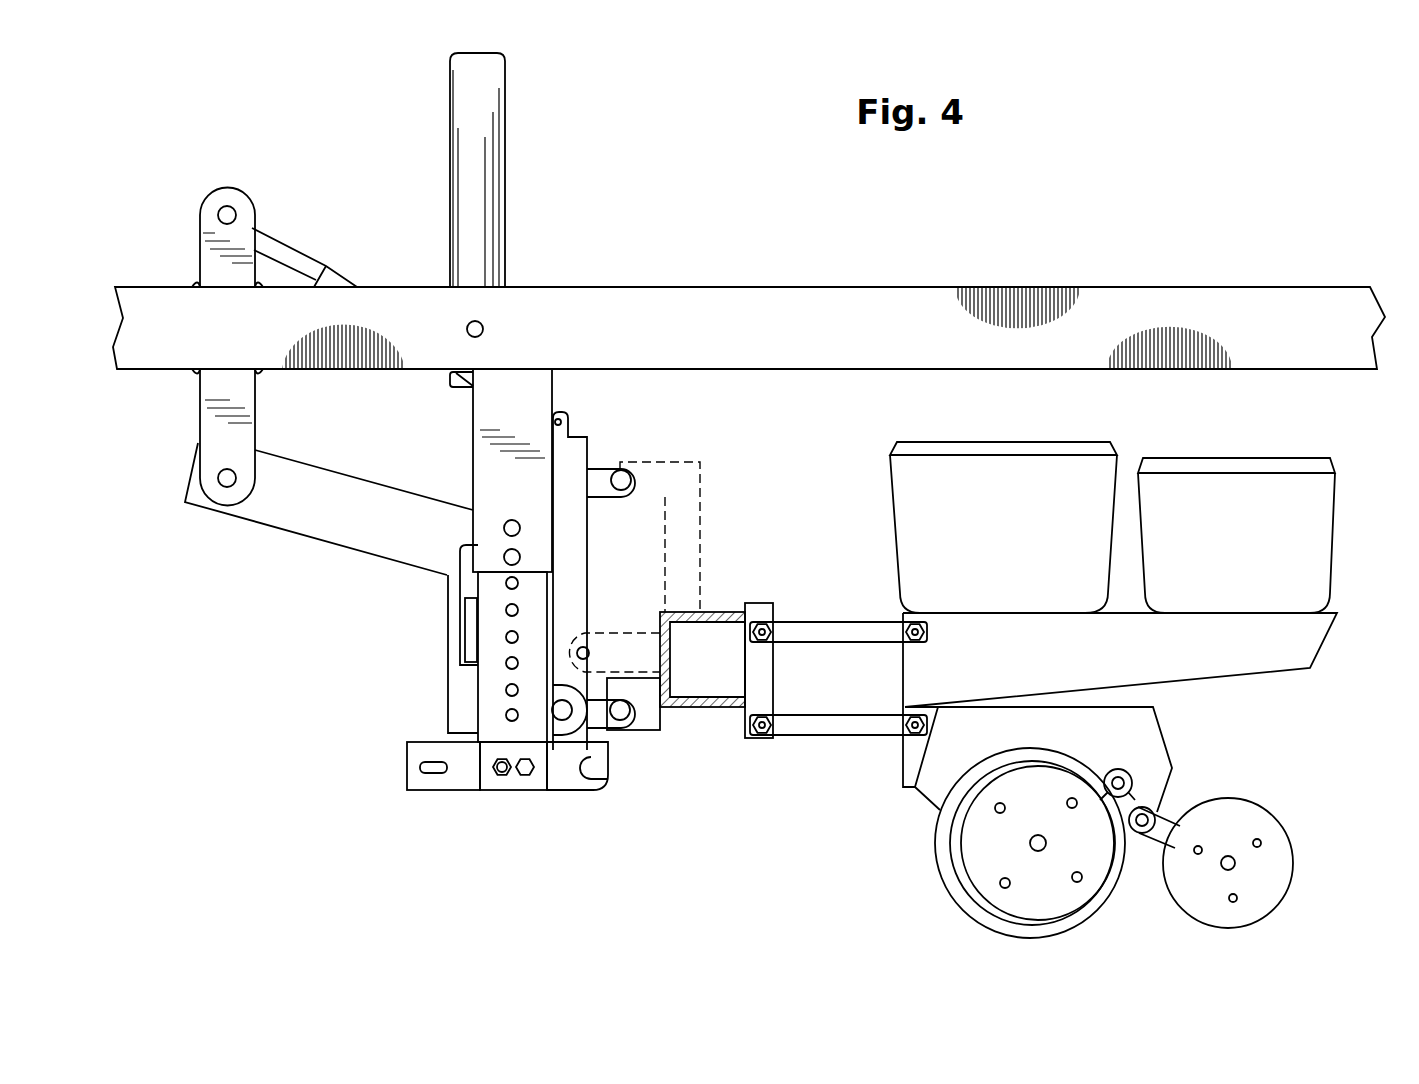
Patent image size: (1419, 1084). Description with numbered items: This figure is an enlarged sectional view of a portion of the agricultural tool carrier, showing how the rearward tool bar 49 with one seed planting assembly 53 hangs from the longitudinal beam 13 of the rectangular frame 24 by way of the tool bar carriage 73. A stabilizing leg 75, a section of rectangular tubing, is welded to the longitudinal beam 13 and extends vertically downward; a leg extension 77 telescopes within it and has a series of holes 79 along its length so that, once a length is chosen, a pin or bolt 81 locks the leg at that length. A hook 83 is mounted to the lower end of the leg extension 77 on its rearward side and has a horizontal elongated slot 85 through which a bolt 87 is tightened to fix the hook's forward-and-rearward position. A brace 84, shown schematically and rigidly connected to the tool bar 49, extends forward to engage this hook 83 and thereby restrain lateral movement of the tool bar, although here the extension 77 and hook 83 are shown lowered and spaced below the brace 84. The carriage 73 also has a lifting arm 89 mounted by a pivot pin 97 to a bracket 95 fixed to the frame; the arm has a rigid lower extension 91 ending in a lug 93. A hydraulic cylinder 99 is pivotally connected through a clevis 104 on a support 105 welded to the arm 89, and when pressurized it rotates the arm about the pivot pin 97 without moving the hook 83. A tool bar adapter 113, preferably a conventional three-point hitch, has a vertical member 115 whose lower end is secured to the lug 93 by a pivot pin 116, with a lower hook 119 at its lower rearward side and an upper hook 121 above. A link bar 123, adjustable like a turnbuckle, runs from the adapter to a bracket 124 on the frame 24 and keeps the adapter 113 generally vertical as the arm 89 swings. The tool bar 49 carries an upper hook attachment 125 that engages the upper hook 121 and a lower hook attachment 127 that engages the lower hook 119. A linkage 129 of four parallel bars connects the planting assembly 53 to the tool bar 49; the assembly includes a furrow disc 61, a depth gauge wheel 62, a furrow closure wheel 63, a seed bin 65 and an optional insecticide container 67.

The longitudinal beam 13 is at (707, 307).
The frame 24 is at (749, 282).
The hydraulic cylinder 99 is at (475, 133).
The lower hook attachment 127 is at (226, 206).
The bracket 124 is at (200, 236).
The link bar 123 is at (340, 268).
The bracket 95 is at (243, 438).
The pivot pin 97 is at (226, 488).
The lifting arm 89 is at (326, 512).
The stabilizing leg 75 is at (510, 410).
The pin or bolt 81 is at (511, 519).
The hole 79 is at (506, 637).
The leg extension 77 is at (457, 592).
The clevis 104 is at (467, 577).
The support 105 is at (460, 650).
The lower extension 91 is at (457, 720).
The horizontal elongated slot 85 is at (447, 770).
The bolt 87 is at (502, 775).
The hook 83 is at (583, 785).
The lug 93 is at (557, 735).
The pivot pin 116 is at (565, 713).
The vertical member 115 is at (570, 457).
The upper hook 121 is at (628, 468).
The upper hook attachment 125 is at (693, 484).
The tool bar adapter 113 is at (600, 522).
The lower hook 119 is at (628, 722).
The brace 84 is at (628, 647).
The rearward tool bar 49 is at (723, 612).
The linkage 129 is at (822, 630).
The seed bin 65 is at (913, 510).
The insecticide container 67 is at (1320, 538).
The tool bar carriage 73 is at (812, 426).
The seed planting assembly 53 is at (1101, 660).
The furrow disc 61 is at (933, 850).
The depth gauge wheel 62 is at (1060, 892).
The furrow closure wheel 63 is at (1273, 875).